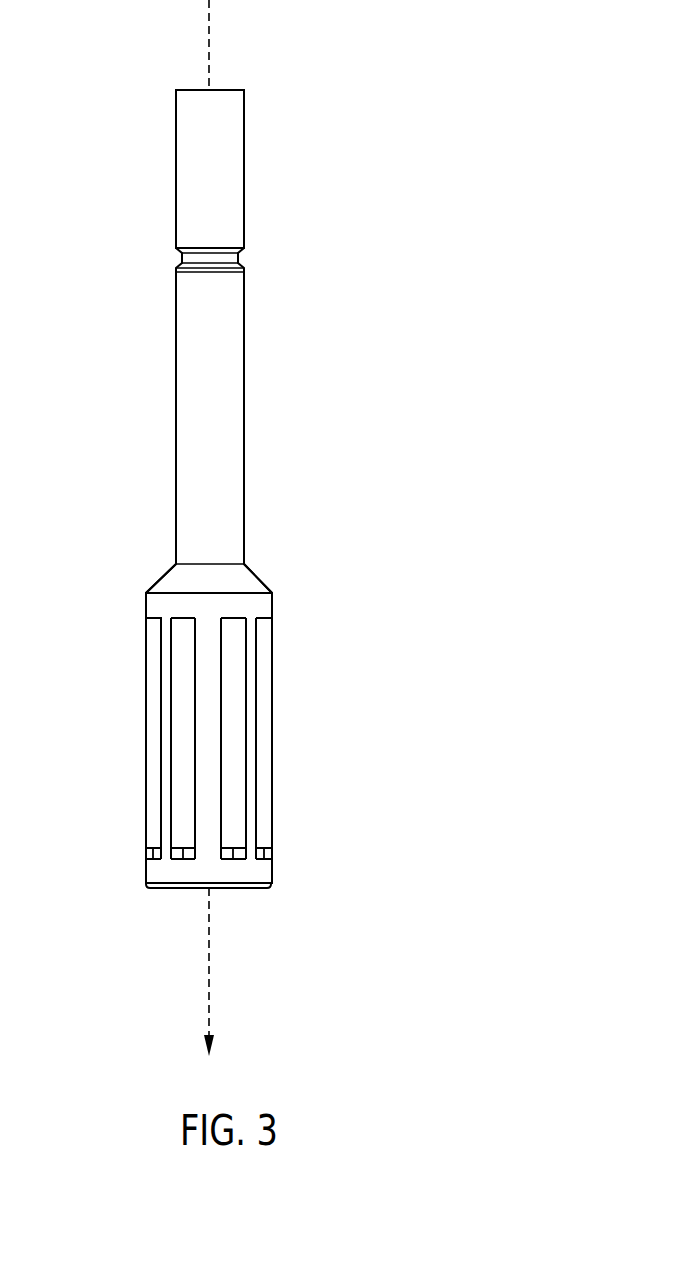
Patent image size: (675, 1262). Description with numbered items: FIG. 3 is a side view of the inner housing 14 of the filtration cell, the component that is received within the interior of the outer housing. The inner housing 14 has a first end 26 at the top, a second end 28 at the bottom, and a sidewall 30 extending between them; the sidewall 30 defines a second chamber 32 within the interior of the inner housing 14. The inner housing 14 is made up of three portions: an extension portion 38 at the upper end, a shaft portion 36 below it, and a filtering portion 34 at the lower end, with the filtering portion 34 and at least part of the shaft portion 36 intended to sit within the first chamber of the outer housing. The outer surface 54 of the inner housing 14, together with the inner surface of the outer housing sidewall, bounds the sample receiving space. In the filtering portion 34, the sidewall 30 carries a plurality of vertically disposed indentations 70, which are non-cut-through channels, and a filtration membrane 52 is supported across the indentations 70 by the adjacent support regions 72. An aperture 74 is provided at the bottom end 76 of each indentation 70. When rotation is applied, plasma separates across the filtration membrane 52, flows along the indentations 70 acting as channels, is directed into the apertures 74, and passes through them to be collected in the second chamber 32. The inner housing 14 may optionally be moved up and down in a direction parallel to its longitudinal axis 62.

The inner housing 14 is at (333, 170).
The first end 26 is at (228, 89).
The second end 28 is at (255, 889).
The sidewall 30 is at (236, 694).
The second chamber 32 is at (196, 89).
The filtering portion 34 is at (146, 712).
The shaft portion 36 is at (185, 507).
The extension portion 38 is at (187, 180).
The filtration membrane 52 is at (170, 735).
The outer surface 54 is at (147, 653).
The longitudinal axis 62 is at (210, 980).
The indentations 70 is at (178, 762).
The support regions 72 is at (165, 822).
The aperture 74 is at (148, 853).
The bottom end 76 is at (155, 844).